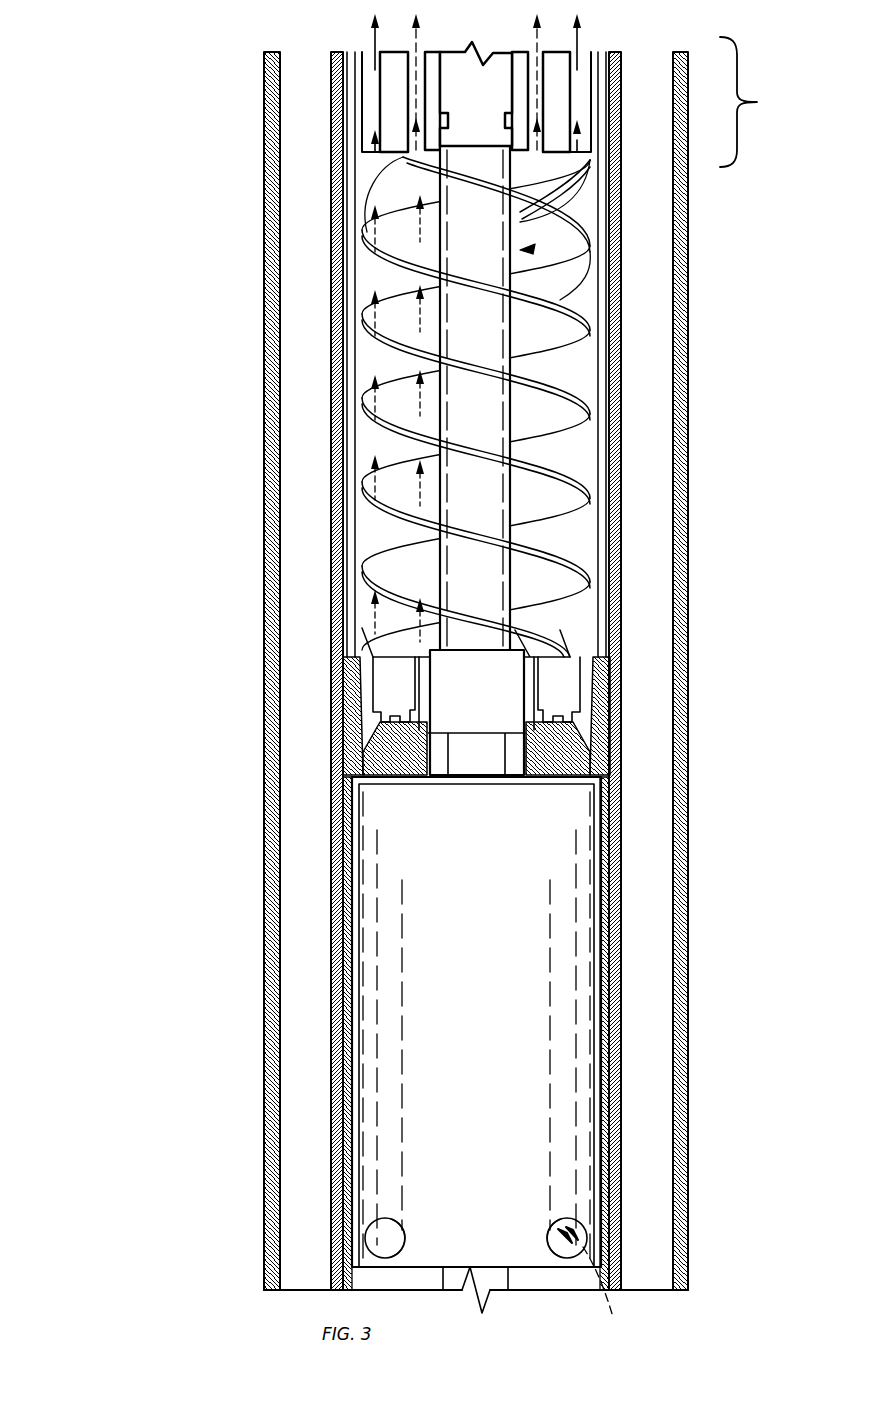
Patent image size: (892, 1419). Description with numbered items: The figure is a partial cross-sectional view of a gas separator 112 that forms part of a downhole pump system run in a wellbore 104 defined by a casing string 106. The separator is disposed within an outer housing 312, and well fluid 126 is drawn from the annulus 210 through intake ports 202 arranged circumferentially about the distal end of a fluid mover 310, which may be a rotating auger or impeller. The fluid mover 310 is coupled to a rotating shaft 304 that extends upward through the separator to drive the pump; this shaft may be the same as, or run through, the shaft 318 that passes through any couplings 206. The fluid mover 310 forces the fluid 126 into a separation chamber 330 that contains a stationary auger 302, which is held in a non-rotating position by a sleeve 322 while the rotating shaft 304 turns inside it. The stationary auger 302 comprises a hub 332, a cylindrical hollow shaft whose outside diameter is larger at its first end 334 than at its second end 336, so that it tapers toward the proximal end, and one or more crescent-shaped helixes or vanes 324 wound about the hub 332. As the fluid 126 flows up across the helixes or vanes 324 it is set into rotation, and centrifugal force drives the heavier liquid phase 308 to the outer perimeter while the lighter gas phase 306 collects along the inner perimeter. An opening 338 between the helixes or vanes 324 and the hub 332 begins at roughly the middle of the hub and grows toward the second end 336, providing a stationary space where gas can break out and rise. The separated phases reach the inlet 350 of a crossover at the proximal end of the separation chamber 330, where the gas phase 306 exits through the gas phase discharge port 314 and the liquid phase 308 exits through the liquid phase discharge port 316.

The wellbore 104 is at (690, 338).
The casing string 106 is at (688, 292).
The gas separator 112 is at (157, 60).
The fluid 126 is at (615, 1303).
The intake ports 202 is at (393, 1237).
The coupling 206 is at (510, 1275).
The annulus 210 is at (655, 607).
The stationary auger 302 is at (543, 695).
The rotating shaft 304 is at (515, 763).
The gas phase 306 is at (395, 255).
The liquid phase 308 is at (374, 236).
The fluid mover 310 is at (606, 976).
The outer housing 312 is at (625, 1040).
The gas phase discharge port 314 is at (417, 97).
The liquid phase discharge port 316 is at (375, 75).
The shaft 318 is at (417, 82).
The sleeve 322 is at (610, 455).
The helixes or vanes 324 is at (570, 410).
The separation chamber 330 is at (395, 281).
The hub 332 is at (503, 692).
The first end 334 is at (453, 723).
The second end 336 is at (418, 137).
The opening 338 is at (590, 265).
The inlet of crossover 350 is at (757, 102).